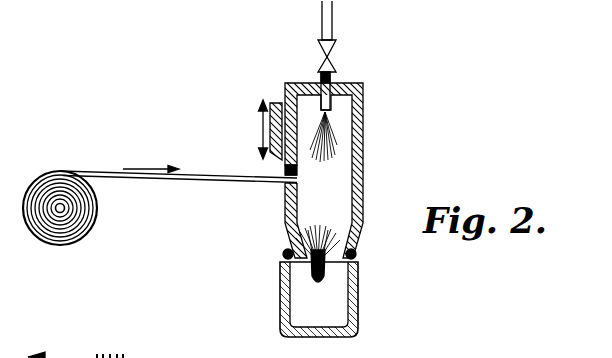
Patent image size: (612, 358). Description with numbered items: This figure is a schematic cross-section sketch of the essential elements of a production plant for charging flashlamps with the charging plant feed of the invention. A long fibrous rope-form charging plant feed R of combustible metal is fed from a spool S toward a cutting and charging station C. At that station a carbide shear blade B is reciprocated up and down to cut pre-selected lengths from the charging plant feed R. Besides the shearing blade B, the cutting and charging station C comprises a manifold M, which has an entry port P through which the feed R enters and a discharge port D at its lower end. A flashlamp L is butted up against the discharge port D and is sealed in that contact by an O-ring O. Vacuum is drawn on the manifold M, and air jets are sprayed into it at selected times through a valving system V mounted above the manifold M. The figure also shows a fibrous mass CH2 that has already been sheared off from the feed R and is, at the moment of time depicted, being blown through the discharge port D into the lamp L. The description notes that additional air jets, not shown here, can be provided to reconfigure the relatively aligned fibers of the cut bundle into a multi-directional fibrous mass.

The spool S is at (53, 186).
The charging plant feed R is at (200, 177).
The entry port P is at (283, 183).
The carbide shear blade B is at (273, 105).
The cutting and charging station C is at (307, 50).
The valving system V is at (337, 51).
The manifold M is at (364, 198).
The fibrous mass CH2 is at (284, 250).
The O-ring O is at (357, 254).
The discharge port D is at (318, 264).
The flashlamp L is at (358, 297).